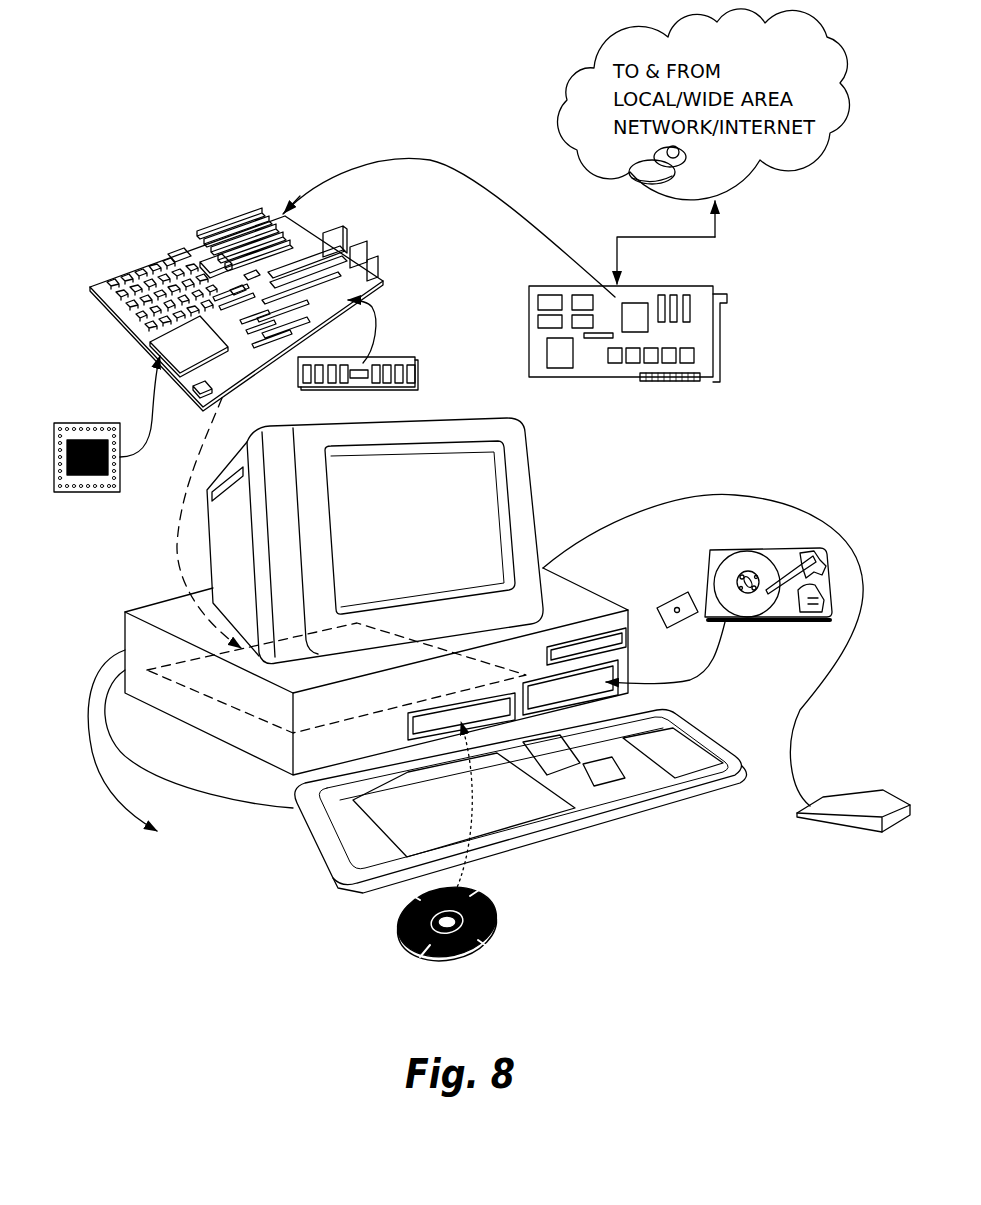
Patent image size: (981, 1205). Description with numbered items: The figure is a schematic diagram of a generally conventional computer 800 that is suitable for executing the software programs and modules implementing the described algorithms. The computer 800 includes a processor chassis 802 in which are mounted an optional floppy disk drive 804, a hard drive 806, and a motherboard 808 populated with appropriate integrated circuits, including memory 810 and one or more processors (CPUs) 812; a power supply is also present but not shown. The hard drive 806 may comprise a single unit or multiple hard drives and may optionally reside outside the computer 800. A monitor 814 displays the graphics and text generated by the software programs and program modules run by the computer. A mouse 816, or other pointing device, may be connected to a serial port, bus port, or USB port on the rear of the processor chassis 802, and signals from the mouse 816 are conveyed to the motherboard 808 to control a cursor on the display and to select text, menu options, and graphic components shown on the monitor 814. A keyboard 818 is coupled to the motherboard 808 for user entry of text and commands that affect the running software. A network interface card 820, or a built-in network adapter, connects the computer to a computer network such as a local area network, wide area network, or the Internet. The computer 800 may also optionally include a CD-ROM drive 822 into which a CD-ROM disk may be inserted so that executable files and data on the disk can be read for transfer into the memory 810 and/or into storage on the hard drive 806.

The computer 800 is at (534, 856).
The processor chassis 802 is at (657, 626).
The floppy disk drive 804 is at (590, 645).
The hard drive 806 is at (785, 613).
The motherboard 808 is at (142, 246).
The memory 810 is at (420, 373).
The processors (CPUs) 812 is at (95, 487).
The monitor 814 is at (540, 487).
The mouse 816 is at (848, 817).
The keyboard 818 is at (617, 813).
The network interface card 820 is at (707, 335).
The CD-ROM drive 822 is at (408, 730).